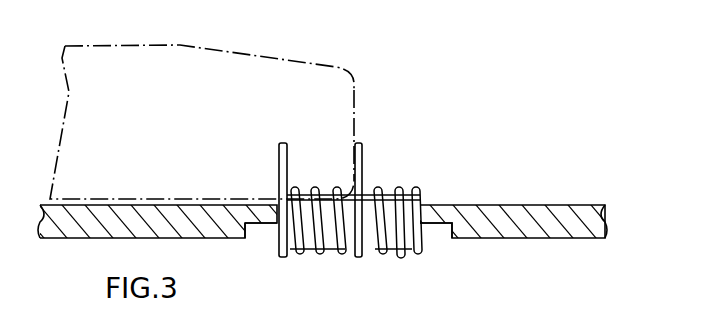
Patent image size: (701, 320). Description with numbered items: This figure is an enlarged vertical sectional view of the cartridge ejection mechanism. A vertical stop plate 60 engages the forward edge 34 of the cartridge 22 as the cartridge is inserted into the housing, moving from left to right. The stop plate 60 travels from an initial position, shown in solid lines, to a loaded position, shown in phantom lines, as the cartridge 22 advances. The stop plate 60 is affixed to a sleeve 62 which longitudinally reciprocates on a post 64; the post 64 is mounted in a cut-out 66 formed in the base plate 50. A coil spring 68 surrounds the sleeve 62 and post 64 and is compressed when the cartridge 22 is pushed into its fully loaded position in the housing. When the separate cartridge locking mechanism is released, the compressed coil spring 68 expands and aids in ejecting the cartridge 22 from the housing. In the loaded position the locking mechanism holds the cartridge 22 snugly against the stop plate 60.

The cartridge 22 is at (157, 44).
The forward edge 34 is at (356, 93).
The base plate 50 is at (520, 214).
The vertical stop plate 60 is at (279, 150).
The sleeve 62 is at (316, 258).
The post 64 is at (396, 258).
The cut-out 66 is at (249, 241).
The coil spring 68 is at (347, 258).